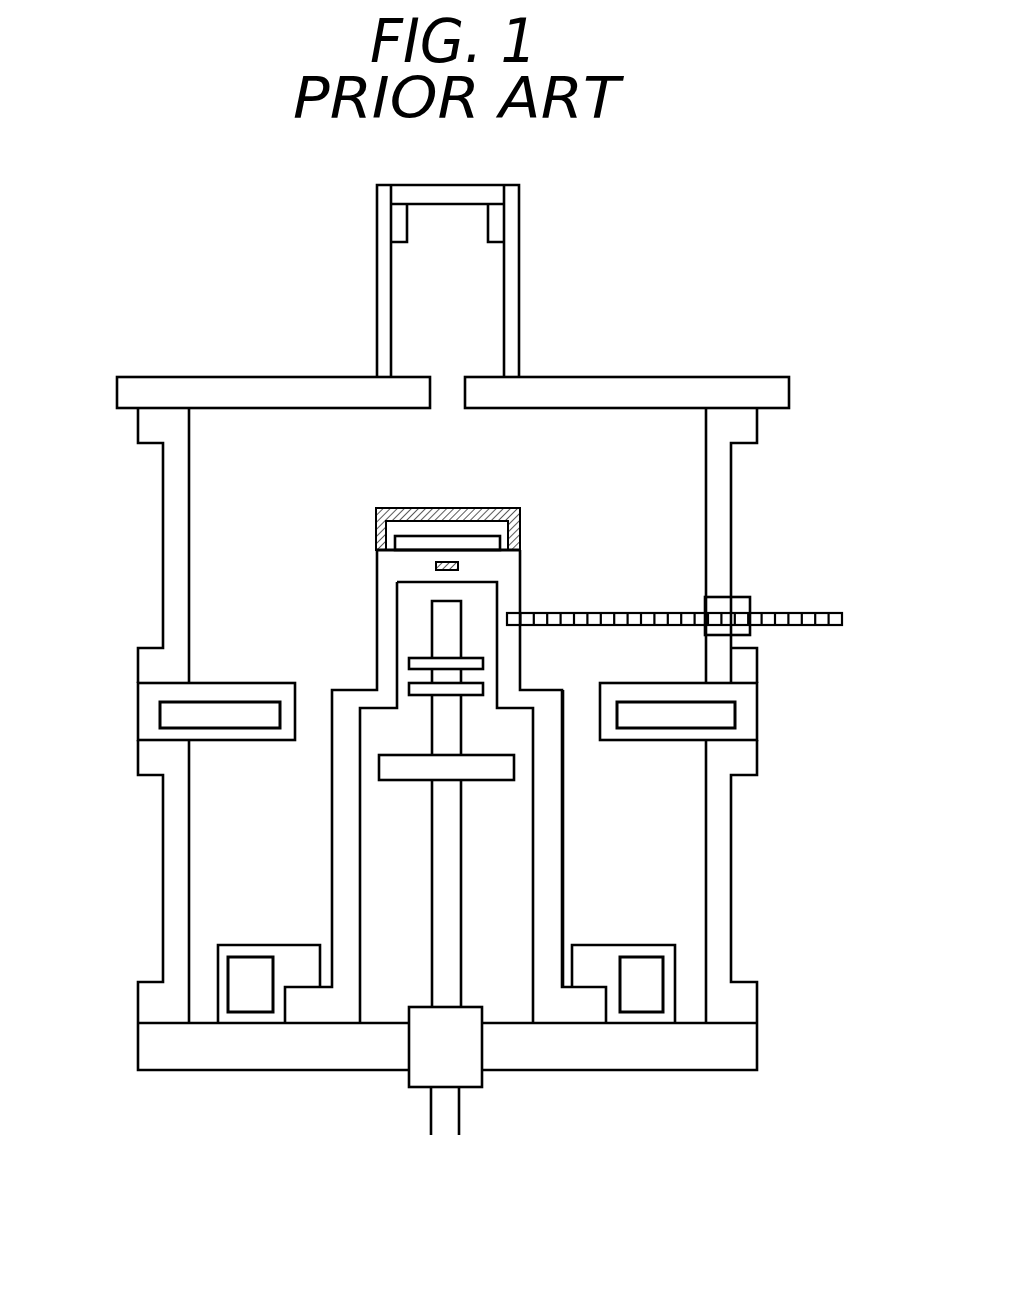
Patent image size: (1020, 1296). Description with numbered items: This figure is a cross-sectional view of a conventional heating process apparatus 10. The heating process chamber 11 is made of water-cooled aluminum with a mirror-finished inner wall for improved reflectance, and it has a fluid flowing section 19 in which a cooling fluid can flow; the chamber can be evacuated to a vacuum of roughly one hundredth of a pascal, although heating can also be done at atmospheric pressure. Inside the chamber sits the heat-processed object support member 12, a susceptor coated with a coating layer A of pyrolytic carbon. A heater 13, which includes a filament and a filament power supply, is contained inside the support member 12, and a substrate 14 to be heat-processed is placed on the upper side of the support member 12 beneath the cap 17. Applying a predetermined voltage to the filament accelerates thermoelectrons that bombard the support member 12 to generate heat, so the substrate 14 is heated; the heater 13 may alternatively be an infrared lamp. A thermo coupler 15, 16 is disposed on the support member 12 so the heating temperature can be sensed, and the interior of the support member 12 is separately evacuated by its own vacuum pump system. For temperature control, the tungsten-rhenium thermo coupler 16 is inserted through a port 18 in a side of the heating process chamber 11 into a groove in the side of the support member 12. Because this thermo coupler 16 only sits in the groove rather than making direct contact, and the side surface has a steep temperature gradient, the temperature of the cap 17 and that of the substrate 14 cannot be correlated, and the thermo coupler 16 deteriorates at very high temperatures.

The heating process apparatus 10 is at (228, 212).
The heating process chamber 11 is at (675, 363).
The heat-processed object support member 12 is at (341, 832).
The heater 13 is at (463, 612).
The substrate 14 is at (481, 536).
The thermo coupler 15 is at (435, 568).
The thermo coupler 16 is at (846, 618).
The cap 17 is at (391, 508).
The port 18 is at (752, 633).
The fluid flowing section 19 is at (167, 712).
The coating layer A is at (563, 860).